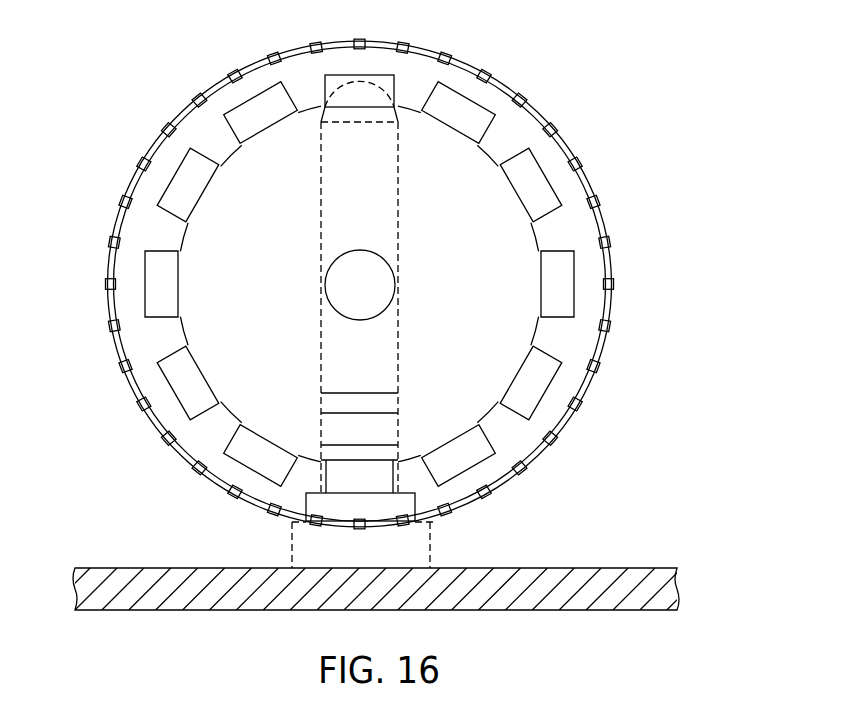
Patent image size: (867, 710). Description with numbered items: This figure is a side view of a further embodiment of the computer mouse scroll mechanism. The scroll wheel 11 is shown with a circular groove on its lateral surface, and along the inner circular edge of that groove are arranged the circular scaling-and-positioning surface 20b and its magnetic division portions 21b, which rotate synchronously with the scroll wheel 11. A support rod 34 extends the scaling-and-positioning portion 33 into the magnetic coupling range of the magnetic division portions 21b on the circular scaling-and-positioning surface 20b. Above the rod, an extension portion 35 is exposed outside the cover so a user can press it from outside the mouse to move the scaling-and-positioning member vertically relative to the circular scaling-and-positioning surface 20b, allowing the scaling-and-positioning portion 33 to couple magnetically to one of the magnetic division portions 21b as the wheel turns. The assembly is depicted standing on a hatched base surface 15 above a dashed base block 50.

The scroll wheel 11 is at (178, 108).
The ground plate 15 is at (667, 588).
The circular scaling-and-positioning surface 20b is at (699, 152).
The magnetic division portions 21b is at (530, 187).
The scaling-and-positioning portion 33 is at (365, 429).
The support rod 34 is at (363, 403).
The extension portion 35 is at (372, 107).
The base block 50 is at (413, 547).